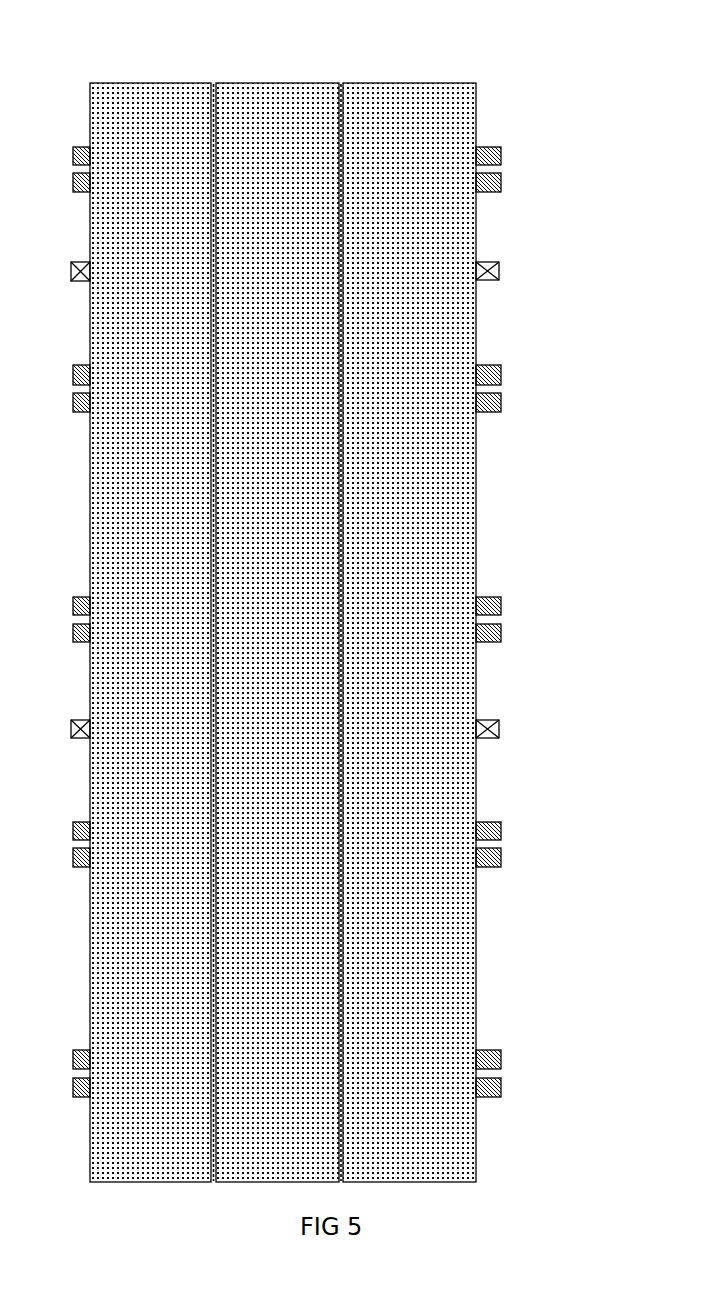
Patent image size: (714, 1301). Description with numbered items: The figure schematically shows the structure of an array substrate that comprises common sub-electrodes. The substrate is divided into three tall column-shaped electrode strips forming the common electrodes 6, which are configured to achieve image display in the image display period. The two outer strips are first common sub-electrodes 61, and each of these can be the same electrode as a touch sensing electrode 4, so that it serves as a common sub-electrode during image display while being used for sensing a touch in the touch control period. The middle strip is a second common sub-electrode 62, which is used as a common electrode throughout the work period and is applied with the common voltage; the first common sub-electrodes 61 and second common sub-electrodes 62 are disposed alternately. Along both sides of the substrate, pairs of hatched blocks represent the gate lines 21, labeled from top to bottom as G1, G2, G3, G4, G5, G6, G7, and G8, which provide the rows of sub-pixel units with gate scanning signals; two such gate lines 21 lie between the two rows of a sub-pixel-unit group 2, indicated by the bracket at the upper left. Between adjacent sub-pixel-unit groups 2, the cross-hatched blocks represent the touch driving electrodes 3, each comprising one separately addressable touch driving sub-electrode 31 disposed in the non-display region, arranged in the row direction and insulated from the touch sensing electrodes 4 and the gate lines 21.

The sub-pixel-unit group 2 is at (88, 84).
The touch driving electrode 3 is at (500, 720).
The touch driving sub-electrode 31 is at (549, 455).
The gate line 21 is at (493, 192).
The touch sensing electrode 4 is at (148, 88).
The first common sub-electrode 61 is at (295, 594).
The common electrode 6 is at (295, 592).
The second common sub-electrode 62 is at (277, 592).
The gate line G1 is at (503, 157).
The gate line G2 is at (507, 205).
The gate line G3 is at (503, 375).
The gate line G4 is at (503, 403).
The gate line G5 is at (503, 605).
The gate line G6 is at (503, 633).
The gate line G7 is at (503, 830).
The gate line G8 is at (503, 858).